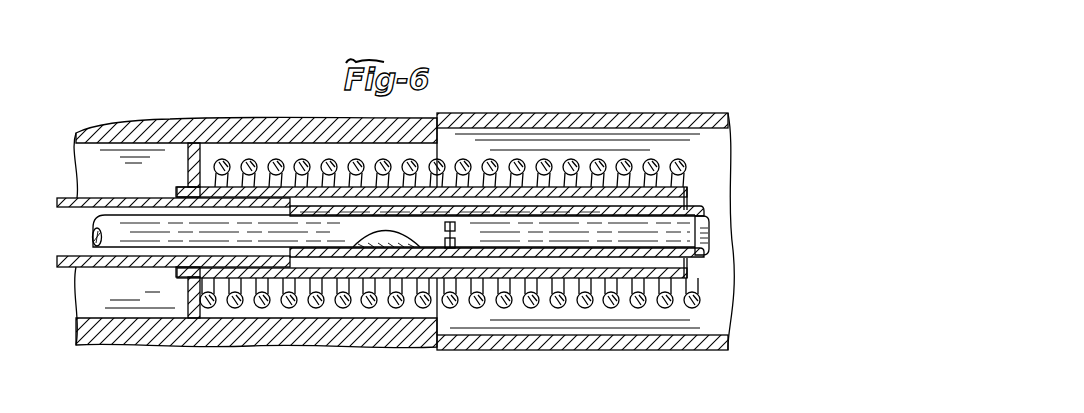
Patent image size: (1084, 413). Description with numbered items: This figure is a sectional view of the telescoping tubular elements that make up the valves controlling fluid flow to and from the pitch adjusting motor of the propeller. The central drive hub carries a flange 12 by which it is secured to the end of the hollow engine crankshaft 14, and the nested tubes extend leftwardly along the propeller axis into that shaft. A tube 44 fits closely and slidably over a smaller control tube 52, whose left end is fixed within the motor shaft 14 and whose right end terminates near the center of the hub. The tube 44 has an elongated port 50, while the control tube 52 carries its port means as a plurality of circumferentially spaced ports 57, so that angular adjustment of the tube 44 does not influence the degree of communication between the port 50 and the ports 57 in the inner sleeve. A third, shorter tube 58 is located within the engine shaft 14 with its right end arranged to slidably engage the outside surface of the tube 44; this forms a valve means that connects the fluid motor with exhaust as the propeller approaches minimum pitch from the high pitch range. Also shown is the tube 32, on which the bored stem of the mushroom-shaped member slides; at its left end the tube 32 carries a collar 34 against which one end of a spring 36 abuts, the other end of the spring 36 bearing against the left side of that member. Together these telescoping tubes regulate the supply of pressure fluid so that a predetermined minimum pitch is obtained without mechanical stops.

The engine crankshaft 14 is at (275, 121).
The flange 12 is at (462, 116).
The collar 34 is at (190, 170).
The tube 32 is at (657, 194).
The spring 36 is at (233, 306).
The third tube 58 is at (92, 268).
The elongated port 50 is at (500, 216).
The control tube 52 is at (372, 236).
The circumferentially spaced ports 57 is at (462, 231).
The tube 44 is at (697, 213).